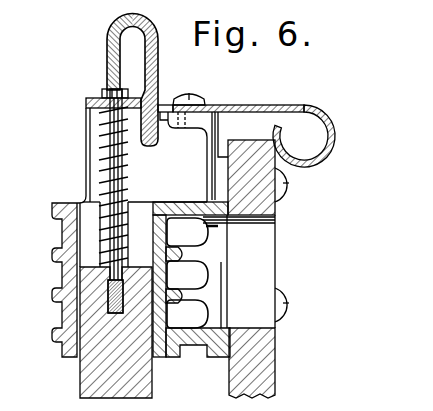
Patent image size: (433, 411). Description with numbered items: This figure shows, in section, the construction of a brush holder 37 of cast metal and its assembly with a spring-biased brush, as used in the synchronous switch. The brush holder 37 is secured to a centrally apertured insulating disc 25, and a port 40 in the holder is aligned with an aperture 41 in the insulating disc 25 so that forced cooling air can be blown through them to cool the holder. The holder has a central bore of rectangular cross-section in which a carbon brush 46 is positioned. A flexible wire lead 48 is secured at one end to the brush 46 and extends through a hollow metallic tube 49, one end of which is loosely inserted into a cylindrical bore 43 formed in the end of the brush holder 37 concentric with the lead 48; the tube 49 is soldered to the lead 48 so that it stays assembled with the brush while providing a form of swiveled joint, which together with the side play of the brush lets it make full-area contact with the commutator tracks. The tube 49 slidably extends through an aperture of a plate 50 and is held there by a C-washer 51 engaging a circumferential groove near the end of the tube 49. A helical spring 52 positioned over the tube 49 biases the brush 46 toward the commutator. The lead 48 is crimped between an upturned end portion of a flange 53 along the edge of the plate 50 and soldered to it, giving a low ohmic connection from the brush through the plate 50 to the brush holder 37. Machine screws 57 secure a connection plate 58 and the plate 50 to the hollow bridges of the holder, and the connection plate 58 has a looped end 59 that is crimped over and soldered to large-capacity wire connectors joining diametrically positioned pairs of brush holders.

The insulating disc 25 is at (272, 364).
The brush holder 37 is at (68, 320).
The port 40 is at (221, 328).
The aperture 41 is at (259, 223).
The cylindrical bore 43 is at (108, 277).
The carbon brush 46 is at (88, 377).
The flexible wire lead 48 is at (107, 57).
The hollow metallic tube 49 is at (105, 172).
The plate 50 is at (86, 100).
The C-washer 51 is at (101, 91).
The helical spring 52 is at (110, 145).
The flange 53 is at (141, 142).
The machine screw 57 is at (196, 96).
The connection plate 58 is at (236, 105).
The looped end 59 is at (304, 167).